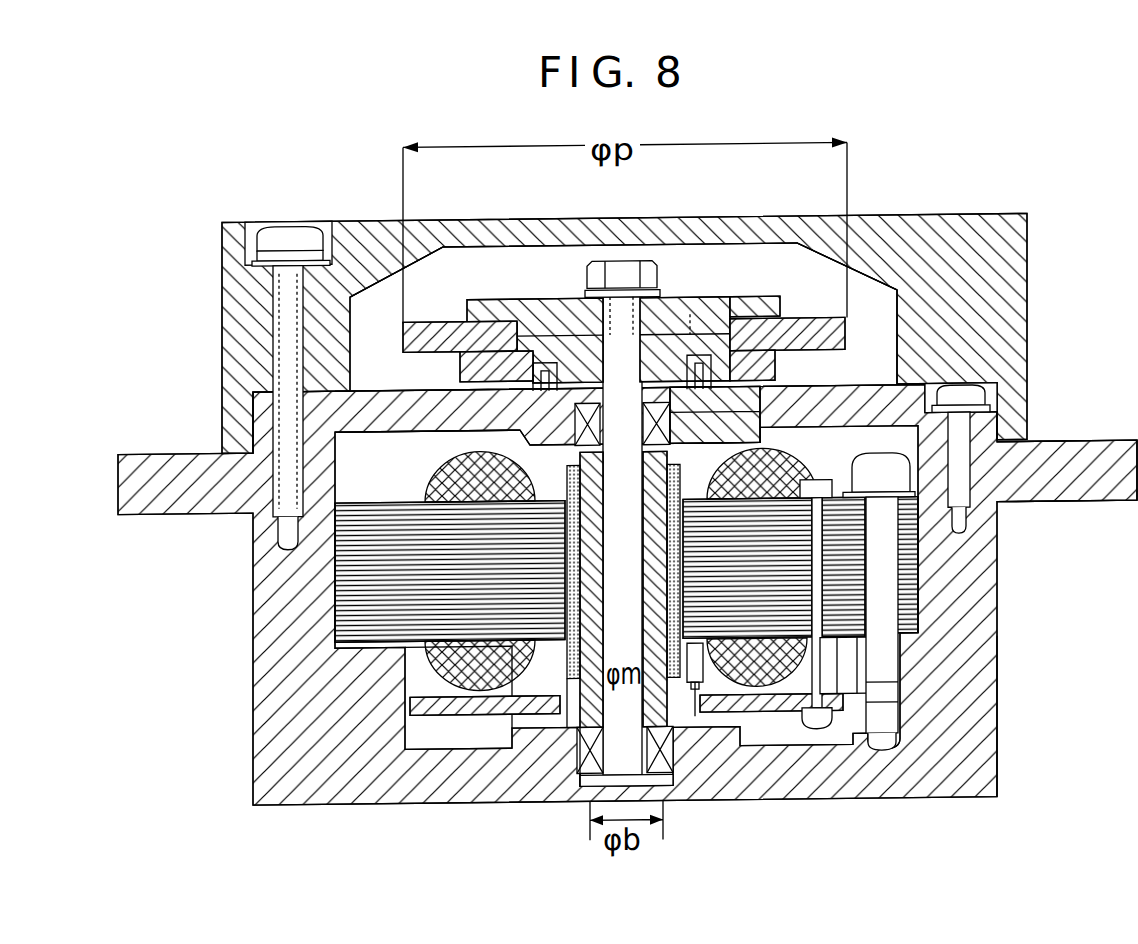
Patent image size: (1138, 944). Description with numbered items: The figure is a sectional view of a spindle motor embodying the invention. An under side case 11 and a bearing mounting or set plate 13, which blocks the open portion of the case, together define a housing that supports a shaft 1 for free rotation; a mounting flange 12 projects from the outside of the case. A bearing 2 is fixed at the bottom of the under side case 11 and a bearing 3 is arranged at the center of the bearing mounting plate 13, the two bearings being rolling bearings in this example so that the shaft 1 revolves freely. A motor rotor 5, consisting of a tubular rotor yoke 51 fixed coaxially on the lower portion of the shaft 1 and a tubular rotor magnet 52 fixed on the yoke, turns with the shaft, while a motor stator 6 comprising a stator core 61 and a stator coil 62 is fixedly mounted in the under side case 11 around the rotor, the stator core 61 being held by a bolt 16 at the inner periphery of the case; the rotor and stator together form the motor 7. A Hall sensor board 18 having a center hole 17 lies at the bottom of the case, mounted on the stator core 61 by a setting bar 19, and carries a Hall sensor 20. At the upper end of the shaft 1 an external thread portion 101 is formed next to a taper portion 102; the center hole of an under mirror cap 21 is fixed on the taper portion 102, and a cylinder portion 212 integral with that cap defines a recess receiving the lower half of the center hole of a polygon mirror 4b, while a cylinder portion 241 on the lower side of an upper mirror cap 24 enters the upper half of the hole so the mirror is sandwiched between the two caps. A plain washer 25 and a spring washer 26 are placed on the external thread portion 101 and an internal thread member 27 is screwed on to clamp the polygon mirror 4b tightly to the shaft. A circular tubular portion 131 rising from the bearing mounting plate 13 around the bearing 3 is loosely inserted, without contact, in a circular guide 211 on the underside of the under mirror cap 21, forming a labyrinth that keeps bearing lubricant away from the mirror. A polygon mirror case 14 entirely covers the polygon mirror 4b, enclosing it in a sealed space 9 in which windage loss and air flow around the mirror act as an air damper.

The shaft 1 is at (582, 790).
The bearing 2 is at (672, 755).
The bearing 3 is at (830, 383).
The polygon mirror 4b is at (905, 288).
The motor rotor 5 is at (556, 469).
The motor stator 6 is at (938, 630).
The motor 7 is at (302, 597).
The sealed space 9 is at (384, 327).
The under side case 11 is at (985, 694).
The mounting flange 12 is at (999, 506).
The bearing mounting plate 13 is at (950, 389).
The polygon mirror case 14 is at (893, 216).
The bolt 16 is at (880, 600).
The center hole 17 is at (700, 690).
The Hall sensor board 18 is at (428, 745).
The setting bar 19 is at (822, 670).
The Hall sensor 20 is at (770, 714).
The under mirror cap 21 is at (483, 372).
The upper mirror cap 24 is at (403, 237).
The plain washer 25 is at (565, 297).
The spring washer 26 is at (585, 292).
The internal thread member 27 is at (643, 261).
The rotor yoke 51 is at (573, 745).
The rotor magnet 52 is at (420, 688).
The stator core 61 is at (920, 568).
The stator coil 62 is at (420, 648).
The external thread portion 101 is at (662, 292).
The taper portion 102 is at (690, 315).
The circular tubular portion 131 is at (897, 335).
The circular guide 211 is at (755, 320).
The cylinder portion 212 is at (517, 345).
The cylinder portion 241 is at (740, 298).